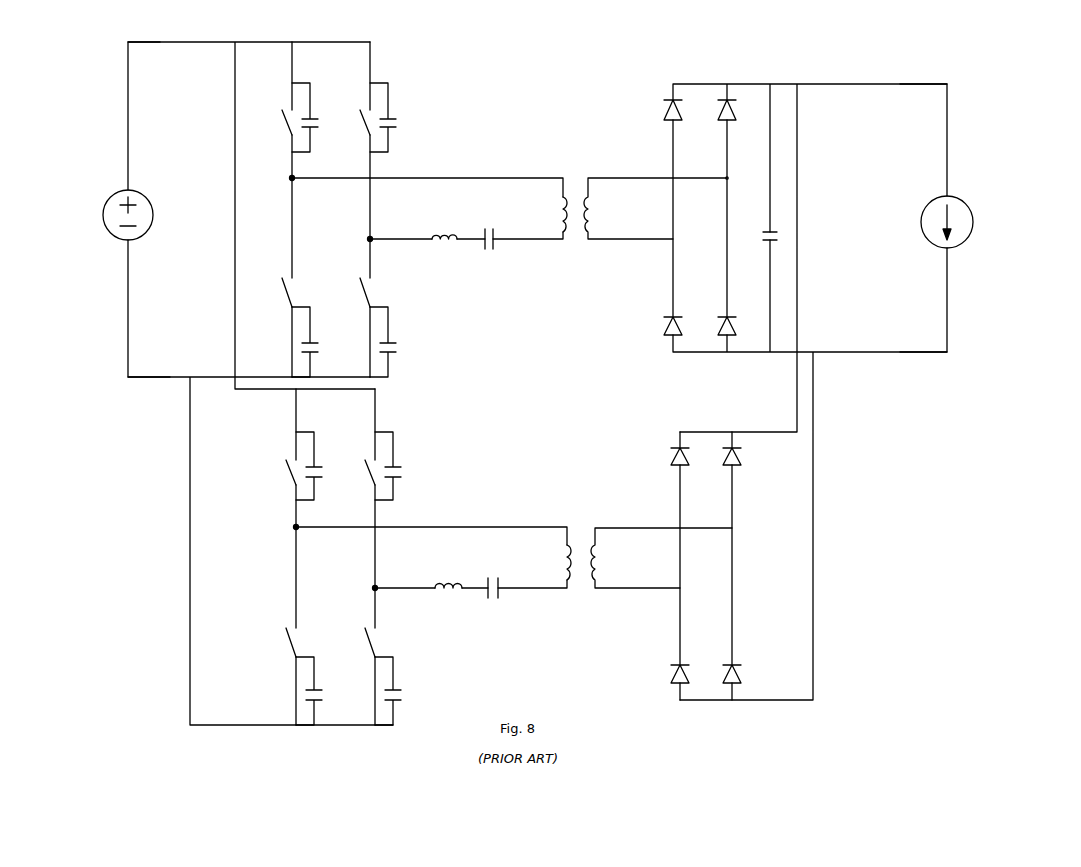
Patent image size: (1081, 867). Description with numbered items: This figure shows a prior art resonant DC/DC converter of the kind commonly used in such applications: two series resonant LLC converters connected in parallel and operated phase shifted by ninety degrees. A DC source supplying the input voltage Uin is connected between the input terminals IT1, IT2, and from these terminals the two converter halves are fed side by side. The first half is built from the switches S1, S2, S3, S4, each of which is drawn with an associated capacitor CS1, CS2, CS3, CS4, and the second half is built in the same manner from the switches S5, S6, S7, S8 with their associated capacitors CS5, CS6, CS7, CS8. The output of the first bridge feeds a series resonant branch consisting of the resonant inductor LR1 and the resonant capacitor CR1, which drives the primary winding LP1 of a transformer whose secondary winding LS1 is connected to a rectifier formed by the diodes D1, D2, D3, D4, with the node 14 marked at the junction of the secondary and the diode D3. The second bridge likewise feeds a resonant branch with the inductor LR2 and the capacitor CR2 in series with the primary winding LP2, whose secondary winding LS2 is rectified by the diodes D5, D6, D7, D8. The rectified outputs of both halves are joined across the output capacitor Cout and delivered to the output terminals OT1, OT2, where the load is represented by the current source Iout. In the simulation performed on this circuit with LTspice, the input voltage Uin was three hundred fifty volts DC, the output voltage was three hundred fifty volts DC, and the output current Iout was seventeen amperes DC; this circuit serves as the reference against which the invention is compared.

The input terminal 1 IT1 is at (144, 29).
The input terminal 2 IT2 is at (149, 364).
The input voltage Uin is at (157, 200).
The switch S1 is at (275, 122).
The switch S2 is at (275, 320).
The switch S3 is at (354, 122).
The switch S4 is at (354, 320).
The switch S5 is at (280, 472).
The switch S6 is at (279, 668).
The switch S7 is at (359, 472).
The switch S8 is at (358, 668).
The snubber capacitor CS1 is at (315, 119).
The snubber capacitor CS2 is at (314, 342).
The snubber capacitor CS3 is at (393, 119).
The snubber capacitor CS4 is at (393, 342).
The snubber capacitor CS5 is at (319, 467).
The snubber capacitor CS6 is at (317, 691).
The snubber capacitor CS7 is at (397, 467).
The snubber capacitor CS8 is at (396, 691).
The resonant inductor LR1 is at (443, 252).
The resonant capacitor CR1 is at (488, 249).
The transformer primary winding LP1 is at (544, 214).
The transformer secondary winding LS1 is at (655, 208).
The resonant inductor LR2 is at (445, 607).
The resonant capacitor CR2 is at (494, 577).
The transformer primary winding LP2 is at (549, 562).
The transformer secondary winding LS2 is at (661, 558).
The rectifier diode D1 is at (684, 119).
The rectifier diode D2 is at (681, 316).
The rectifier diode D3 is at (733, 119).
The rectifier diode D4 is at (733, 316).
The rectifier diode D5 is at (689, 469).
The rectifier diode D6 is at (686, 665).
The rectifier diode D7 is at (738, 469).
The rectifier diode D8 is at (739, 665).
The node 14 is at (737, 171).
The output capacitor Cout is at (753, 223).
The output terminal 1 OT1 is at (923, 70).
The output terminal 2 OT2 is at (923, 341).
The output current Iout is at (993, 163).